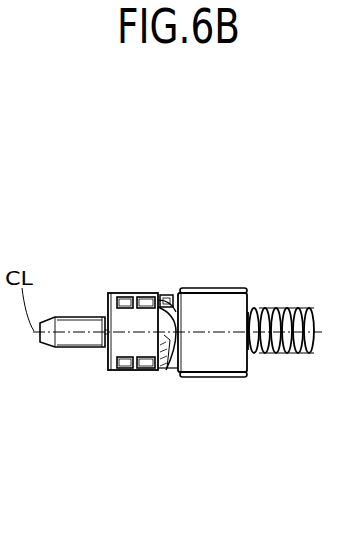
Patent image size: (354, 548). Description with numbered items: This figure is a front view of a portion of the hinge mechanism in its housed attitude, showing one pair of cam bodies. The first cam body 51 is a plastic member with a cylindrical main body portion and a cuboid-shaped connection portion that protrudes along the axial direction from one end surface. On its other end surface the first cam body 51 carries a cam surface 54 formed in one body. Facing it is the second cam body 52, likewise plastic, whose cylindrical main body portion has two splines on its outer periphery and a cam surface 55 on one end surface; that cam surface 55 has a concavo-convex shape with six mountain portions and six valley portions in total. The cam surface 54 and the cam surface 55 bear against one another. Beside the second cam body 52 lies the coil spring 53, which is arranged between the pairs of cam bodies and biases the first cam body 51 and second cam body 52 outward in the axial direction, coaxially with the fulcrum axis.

The first cam body 51 is at (121, 293).
The second cam body 52 is at (227, 289).
The coil spring 53 is at (285, 311).
The cam surface 54 is at (182, 313).
The cam surface 55 is at (158, 318).